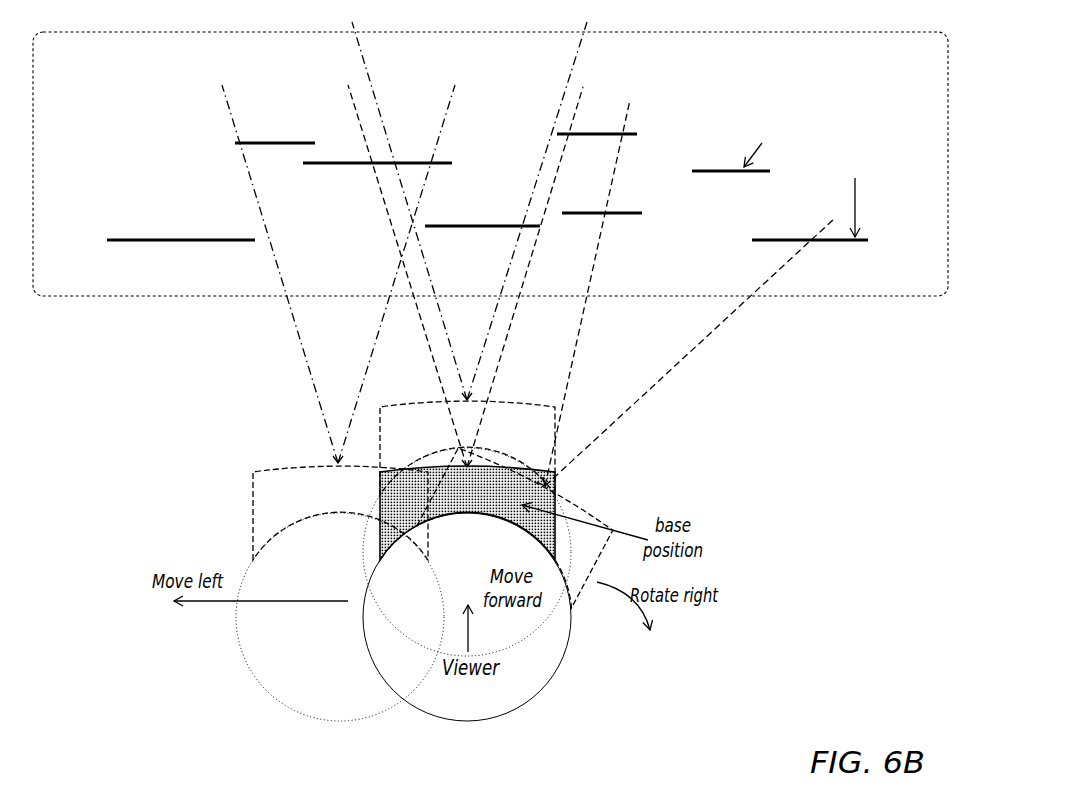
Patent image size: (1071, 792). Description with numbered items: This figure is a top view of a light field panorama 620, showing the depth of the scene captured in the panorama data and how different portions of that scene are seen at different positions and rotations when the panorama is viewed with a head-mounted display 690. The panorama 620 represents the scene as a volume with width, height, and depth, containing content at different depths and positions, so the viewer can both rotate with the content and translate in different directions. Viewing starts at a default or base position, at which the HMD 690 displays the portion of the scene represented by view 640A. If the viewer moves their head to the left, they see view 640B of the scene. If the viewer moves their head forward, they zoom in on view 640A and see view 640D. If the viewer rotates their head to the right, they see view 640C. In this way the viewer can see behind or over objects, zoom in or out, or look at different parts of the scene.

The light field panorama 620 is at (490, 164).
The view 640A is at (501, 360).
The view 640B is at (308, 357).
The view 640C is at (729, 326).
The view 640D is at (505, 272).
The head-mounted display (HMD) 690 is at (467, 513).